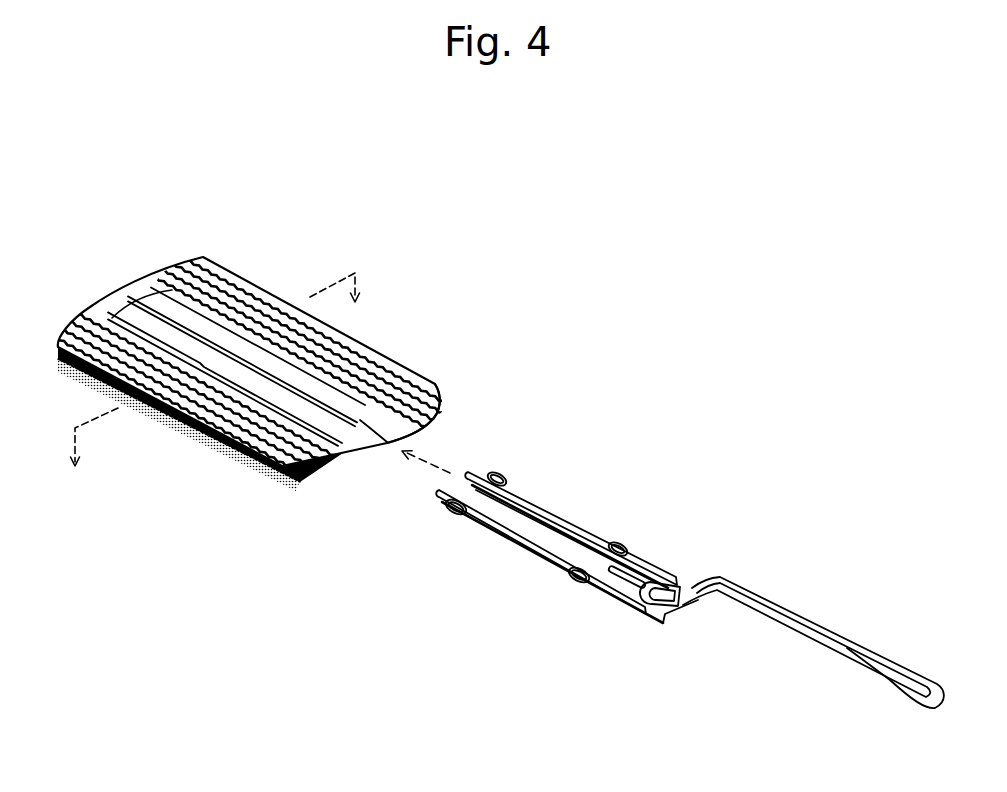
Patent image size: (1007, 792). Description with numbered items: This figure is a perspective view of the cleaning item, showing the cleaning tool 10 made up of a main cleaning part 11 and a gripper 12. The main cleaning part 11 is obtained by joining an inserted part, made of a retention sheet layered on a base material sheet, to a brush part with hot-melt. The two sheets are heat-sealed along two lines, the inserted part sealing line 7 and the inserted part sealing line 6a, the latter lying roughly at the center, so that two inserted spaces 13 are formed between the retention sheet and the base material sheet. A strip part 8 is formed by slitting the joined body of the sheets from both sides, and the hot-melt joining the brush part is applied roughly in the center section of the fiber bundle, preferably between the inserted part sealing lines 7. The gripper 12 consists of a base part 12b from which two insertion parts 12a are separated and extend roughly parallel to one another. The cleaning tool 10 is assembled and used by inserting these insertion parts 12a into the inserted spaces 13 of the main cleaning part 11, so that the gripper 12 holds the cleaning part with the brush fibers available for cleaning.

The cleaning tool 10 is at (695, 272).
The main cleaning part 11 is at (193, 480).
The inserted part sealing line 7 is at (153, 332).
The inserted part sealing line 6a is at (313, 400).
The strip part 8 is at (340, 423).
The inserted space 13 is at (387, 442).
The gripper 12 is at (602, 623).
The insertion part 12a is at (545, 547).
The base part 12b is at (787, 600).